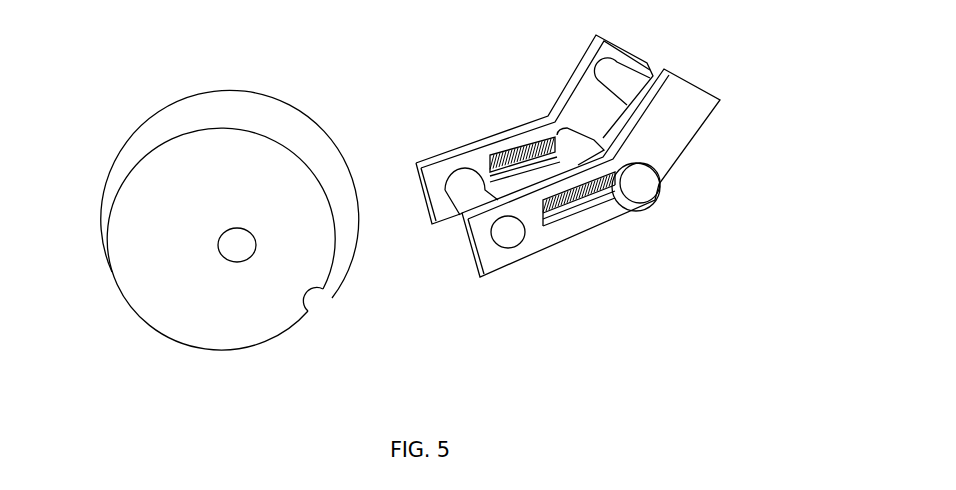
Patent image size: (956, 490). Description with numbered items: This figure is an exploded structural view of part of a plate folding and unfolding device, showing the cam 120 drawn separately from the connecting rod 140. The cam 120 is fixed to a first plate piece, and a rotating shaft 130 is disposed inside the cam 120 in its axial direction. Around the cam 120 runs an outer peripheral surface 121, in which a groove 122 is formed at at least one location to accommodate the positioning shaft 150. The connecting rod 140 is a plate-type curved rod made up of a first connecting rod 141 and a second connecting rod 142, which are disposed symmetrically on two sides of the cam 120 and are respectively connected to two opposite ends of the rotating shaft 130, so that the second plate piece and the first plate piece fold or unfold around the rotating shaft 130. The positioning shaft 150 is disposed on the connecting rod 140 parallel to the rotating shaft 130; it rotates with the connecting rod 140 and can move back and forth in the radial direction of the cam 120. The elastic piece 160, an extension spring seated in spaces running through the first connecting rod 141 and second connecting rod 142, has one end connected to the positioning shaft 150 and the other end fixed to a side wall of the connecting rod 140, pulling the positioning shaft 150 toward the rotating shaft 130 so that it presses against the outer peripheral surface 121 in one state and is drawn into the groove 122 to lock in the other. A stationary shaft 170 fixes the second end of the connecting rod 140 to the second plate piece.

The cam 120 is at (242, 256).
The outer peripheral surface 121 is at (130, 165).
The groove 122 is at (311, 300).
The rotating shaft 130 is at (508, 237).
The connecting rod 140 is at (565, 179).
The first connecting rod 141 is at (621, 205).
The second connecting rod 142 is at (483, 120).
The positioning shaft 150 is at (567, 142).
The elastic piece 160 is at (568, 207).
The stationary shaft 170 is at (582, 61).